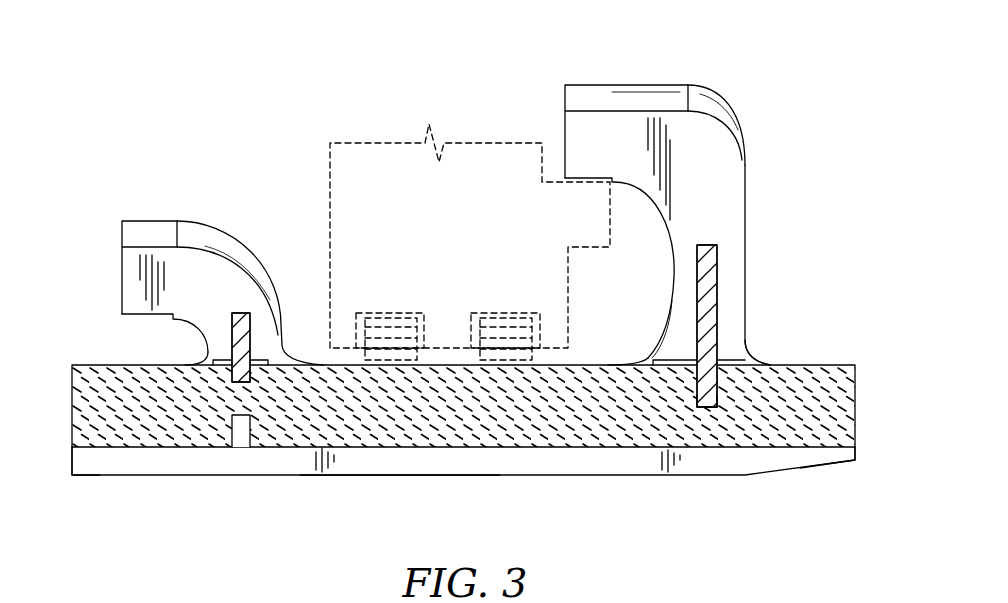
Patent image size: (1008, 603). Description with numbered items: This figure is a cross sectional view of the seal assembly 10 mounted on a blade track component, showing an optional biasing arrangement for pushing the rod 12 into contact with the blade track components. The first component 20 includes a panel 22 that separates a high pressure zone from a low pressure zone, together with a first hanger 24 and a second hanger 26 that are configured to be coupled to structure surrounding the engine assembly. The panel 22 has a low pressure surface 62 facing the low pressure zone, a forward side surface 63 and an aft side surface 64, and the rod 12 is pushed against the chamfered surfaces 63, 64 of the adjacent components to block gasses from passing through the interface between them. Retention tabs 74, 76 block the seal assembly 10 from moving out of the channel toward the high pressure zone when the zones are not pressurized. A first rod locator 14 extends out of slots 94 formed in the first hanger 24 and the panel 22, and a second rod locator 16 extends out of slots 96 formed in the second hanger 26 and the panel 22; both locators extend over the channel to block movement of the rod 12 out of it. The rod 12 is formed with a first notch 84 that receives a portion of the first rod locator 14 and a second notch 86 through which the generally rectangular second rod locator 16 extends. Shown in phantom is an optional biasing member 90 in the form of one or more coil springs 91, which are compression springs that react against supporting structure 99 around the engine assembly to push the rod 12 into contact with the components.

The seal assembly 10 is at (769, 343).
The rod 12 is at (819, 386).
The first rod locator 14 is at (223, 274).
The second rod locator 16 is at (768, 290).
The first component 20 is at (703, 187).
The panel 22 is at (190, 471).
The first hanger 24 is at (149, 220).
The second hanger 26 is at (710, 84).
The low pressure surface 62 is at (390, 476).
The forward side surface 63 is at (72, 462).
The aft side surface 64 is at (855, 452).
The retention tab 74 is at (200, 354).
The retention tab 76 is at (655, 344).
The first notch 84 is at (240, 421).
The second notch 86 is at (706, 407).
The biasing member 90 is at (381, 313).
The coil springs 91 is at (396, 341).
The slots 94 is at (233, 313).
The slots 96 is at (707, 245).
The supporting structure 99 is at (326, 215).